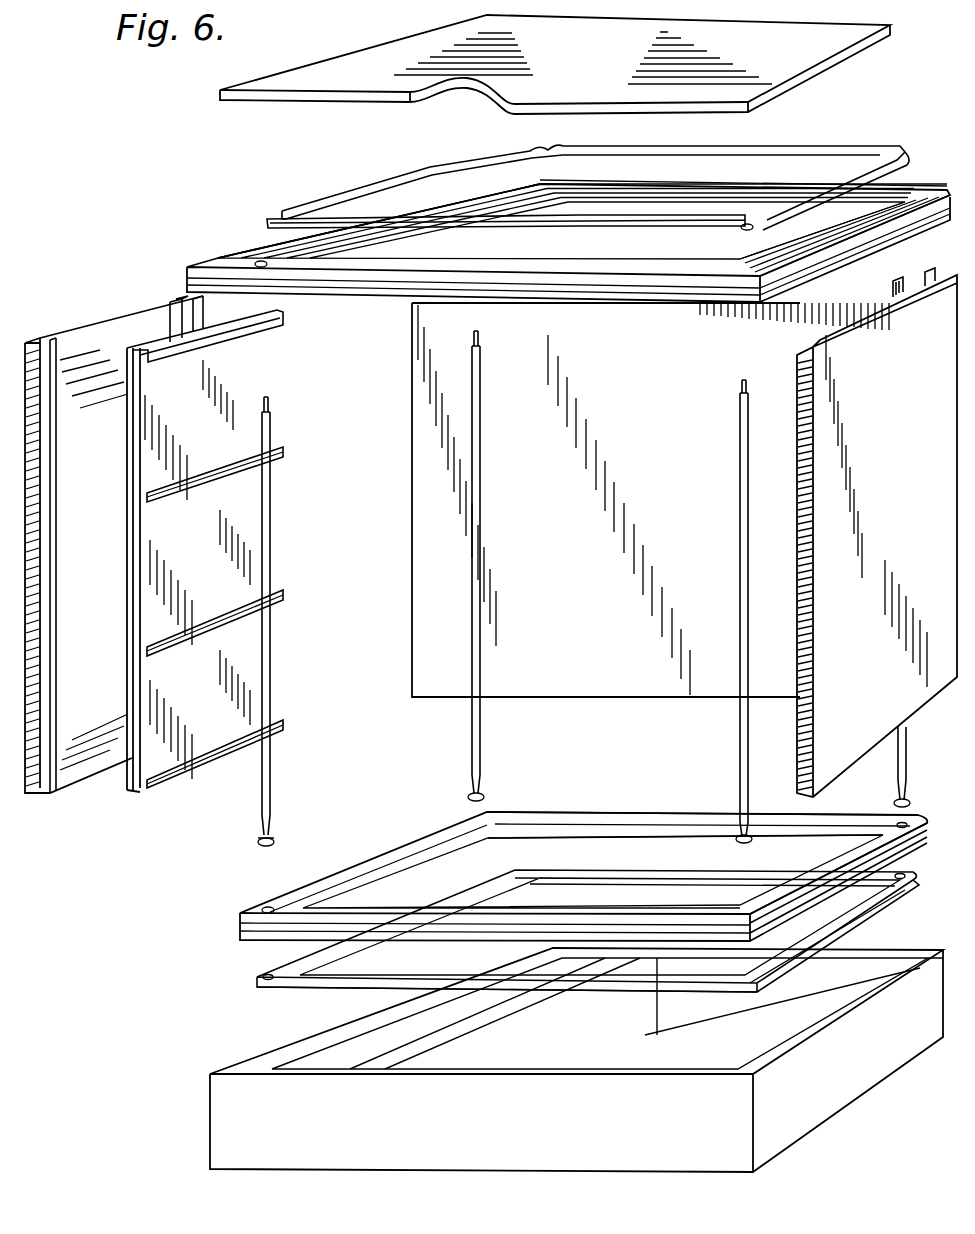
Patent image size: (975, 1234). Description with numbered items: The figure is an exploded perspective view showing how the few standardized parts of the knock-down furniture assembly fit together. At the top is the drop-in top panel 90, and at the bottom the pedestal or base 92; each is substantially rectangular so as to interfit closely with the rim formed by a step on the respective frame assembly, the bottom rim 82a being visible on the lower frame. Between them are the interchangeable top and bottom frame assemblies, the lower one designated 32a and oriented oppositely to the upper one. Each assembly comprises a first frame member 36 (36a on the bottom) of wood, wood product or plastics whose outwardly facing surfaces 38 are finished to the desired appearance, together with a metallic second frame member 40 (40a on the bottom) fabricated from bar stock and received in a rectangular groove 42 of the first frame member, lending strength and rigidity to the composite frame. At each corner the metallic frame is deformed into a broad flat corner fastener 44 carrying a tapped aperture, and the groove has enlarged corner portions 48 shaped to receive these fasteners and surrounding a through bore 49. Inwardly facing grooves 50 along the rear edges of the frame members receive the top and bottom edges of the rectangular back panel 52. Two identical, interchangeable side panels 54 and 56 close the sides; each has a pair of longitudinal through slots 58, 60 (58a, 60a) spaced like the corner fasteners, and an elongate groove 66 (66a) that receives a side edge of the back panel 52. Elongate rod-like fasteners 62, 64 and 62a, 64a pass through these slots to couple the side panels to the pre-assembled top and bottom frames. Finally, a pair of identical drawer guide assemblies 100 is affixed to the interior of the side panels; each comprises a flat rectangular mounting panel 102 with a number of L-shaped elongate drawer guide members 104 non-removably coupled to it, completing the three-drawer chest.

The top panel 90 is at (615, 52).
The base 92 is at (610, 1130).
The first frame member 36a is at (382, 294).
The first frame member 36 is at (356, 836).
The outwardly facing surfaces 38 is at (240, 926).
The second frame member 40 is at (283, 992).
The second frame member 40a is at (317, 200).
The groove 42 is at (355, 238).
The corner fastener 44 is at (268, 223).
The corner portions 48 is at (255, 262).
The through bore 49 is at (266, 906).
The grooves 50 is at (592, 790).
The bottom frame assembly 32a is at (262, 210).
The rim 82a is at (620, 183).
The back panel 52 is at (620, 511).
The side panel 54 is at (104, 495).
The side panel 56 is at (896, 505).
The through slot 58 is at (52, 339).
The through slot 58a is at (812, 350).
The through slot 60 is at (172, 303).
The through slot 60a is at (918, 272).
The groove 66 is at (196, 298).
The groove 66a is at (928, 280).
The rod-like fastener 62 is at (270, 433).
The rod-like fastener 62a is at (740, 451).
The rod-like fastener 64 is at (478, 475).
The rod-like fastener 64a is at (898, 760).
The drawer guide assembly 100 is at (178, 590).
The mounting panel 102 is at (205, 567).
The drawer guide member 104 is at (152, 360).